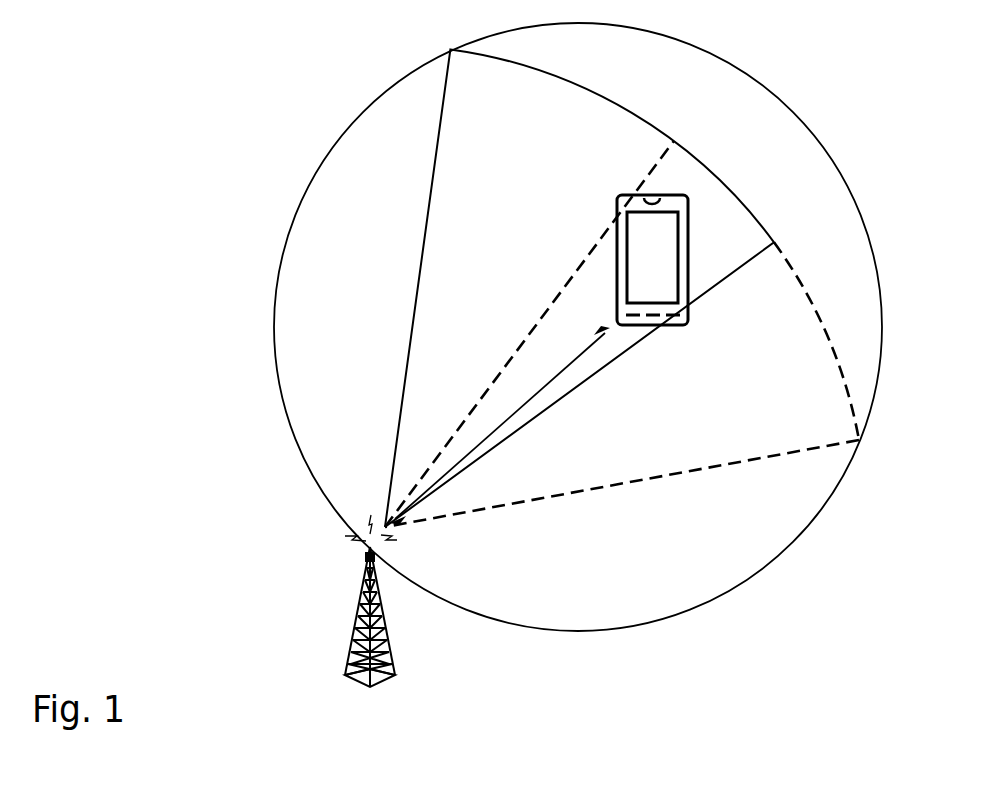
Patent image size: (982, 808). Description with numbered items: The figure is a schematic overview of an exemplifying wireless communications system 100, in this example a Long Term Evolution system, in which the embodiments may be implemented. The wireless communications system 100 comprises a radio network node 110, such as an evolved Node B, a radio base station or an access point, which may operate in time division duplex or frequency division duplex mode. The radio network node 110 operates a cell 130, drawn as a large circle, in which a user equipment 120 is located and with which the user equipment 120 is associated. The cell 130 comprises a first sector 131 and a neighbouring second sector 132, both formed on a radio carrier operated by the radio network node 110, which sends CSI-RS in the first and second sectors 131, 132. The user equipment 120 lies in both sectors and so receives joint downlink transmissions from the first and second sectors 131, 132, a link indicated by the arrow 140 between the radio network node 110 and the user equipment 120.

The wireless communications system 100 is at (229, 219).
The radio network node 110 is at (342, 601).
The user equipment 120 is at (652, 260).
The cell 130 is at (606, 613).
The first sector 131 is at (433, 170).
The second sector 132 is at (818, 317).
The communication link 140 is at (500, 425).